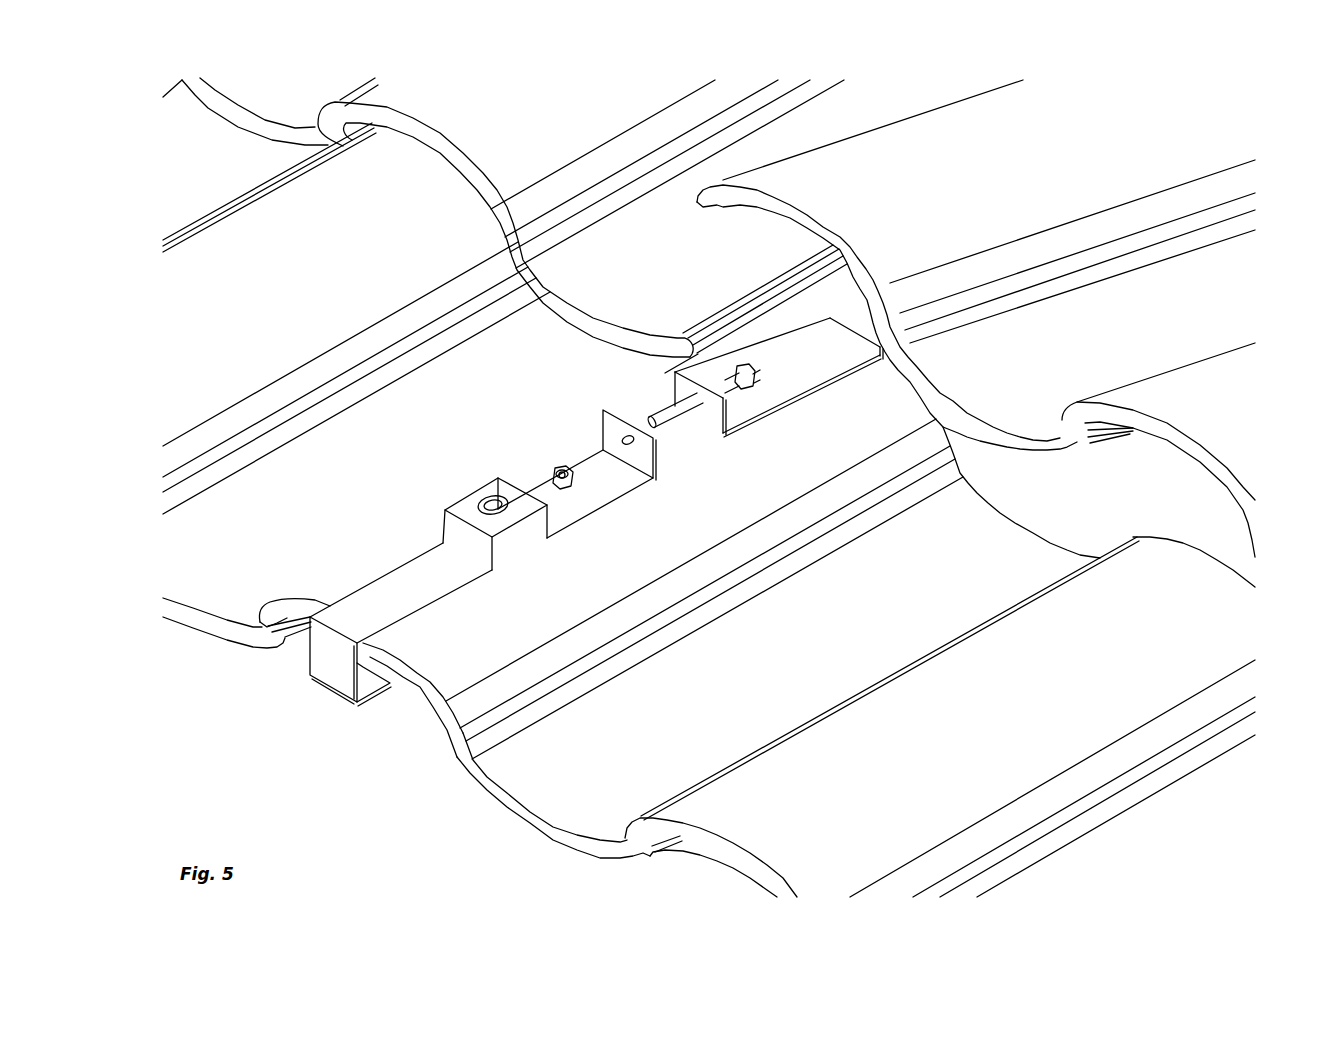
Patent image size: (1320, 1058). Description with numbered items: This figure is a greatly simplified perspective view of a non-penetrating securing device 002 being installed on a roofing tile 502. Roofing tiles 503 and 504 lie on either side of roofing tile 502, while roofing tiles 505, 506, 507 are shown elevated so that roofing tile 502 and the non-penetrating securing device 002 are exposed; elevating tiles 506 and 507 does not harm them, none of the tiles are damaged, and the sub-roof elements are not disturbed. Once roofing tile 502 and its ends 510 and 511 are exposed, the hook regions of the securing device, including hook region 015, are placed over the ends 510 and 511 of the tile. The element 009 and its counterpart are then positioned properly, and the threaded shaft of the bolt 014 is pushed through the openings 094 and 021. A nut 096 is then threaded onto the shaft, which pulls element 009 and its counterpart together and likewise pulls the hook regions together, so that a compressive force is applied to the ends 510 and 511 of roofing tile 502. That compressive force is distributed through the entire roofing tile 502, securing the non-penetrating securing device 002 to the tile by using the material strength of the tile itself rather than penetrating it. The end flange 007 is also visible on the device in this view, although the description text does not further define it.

The roofing tile 502 is at (597, 602).
The roofing tile 503 is at (243, 563).
The roofing tile 504 is at (890, 782).
The roofing tile 505 is at (527, 122).
The roofing tile 506 is at (1122, 146).
The roofing tile 507 is at (1233, 411).
The non-penetrating securing device 002 is at (368, 585).
The hook region 015 is at (358, 703).
The opening 021 is at (632, 447).
The nut 096 is at (561, 464).
The bolt 014 is at (660, 408).
The opening 094 is at (706, 414).
The element 009 is at (768, 410).
The clamp end flange 007 is at (869, 335).
The end 511 is at (912, 397).
The end 510 is at (416, 653).